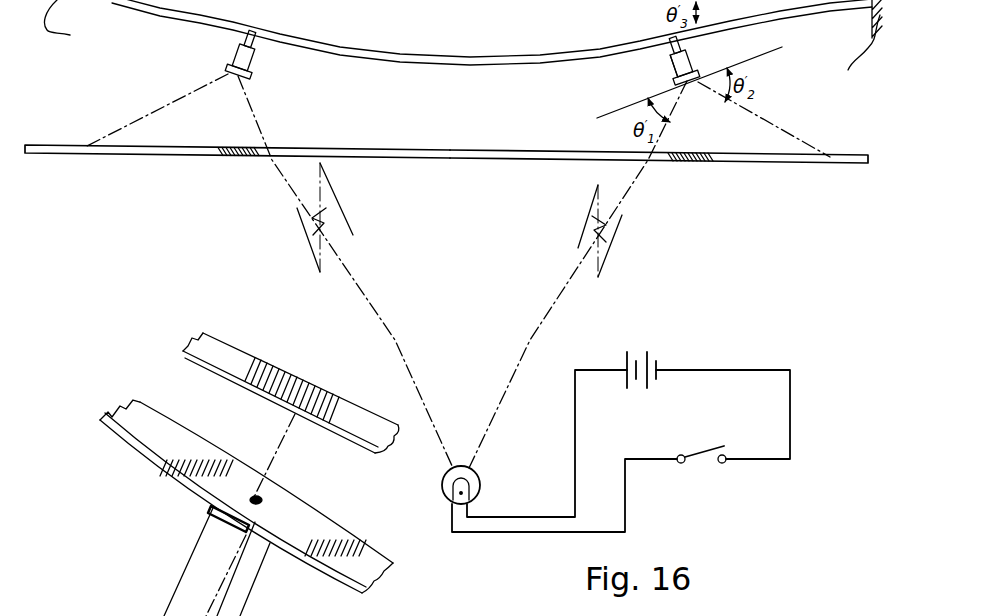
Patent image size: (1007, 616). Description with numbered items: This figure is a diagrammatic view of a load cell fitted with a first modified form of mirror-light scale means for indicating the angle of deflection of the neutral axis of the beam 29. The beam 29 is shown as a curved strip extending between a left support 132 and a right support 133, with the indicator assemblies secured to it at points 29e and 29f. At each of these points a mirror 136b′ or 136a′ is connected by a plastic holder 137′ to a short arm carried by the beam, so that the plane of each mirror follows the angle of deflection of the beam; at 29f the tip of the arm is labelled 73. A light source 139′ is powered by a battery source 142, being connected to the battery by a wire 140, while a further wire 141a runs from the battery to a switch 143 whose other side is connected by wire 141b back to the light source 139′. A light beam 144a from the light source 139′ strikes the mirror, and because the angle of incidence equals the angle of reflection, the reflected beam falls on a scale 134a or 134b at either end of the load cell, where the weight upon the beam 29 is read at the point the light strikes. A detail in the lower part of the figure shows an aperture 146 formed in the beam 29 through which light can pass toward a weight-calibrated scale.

The beam 29 is at (457, 62).
The beam attachment point 29e is at (248, 248).
The beam attachment point 29f is at (679, 43).
The transducer tip 73 is at (662, 35).
The left support 132 is at (77, 23).
The right support wall 133 is at (855, 52).
The scale 134a is at (178, 157).
The scale 134b is at (692, 163).
The mirror 136a′ is at (698, 72).
The mirror 136b′ is at (251, 70).
The plastic holder 137′ is at (234, 59).
The light source 139′ is at (487, 466).
The wire 140 is at (575, 432).
The wire 141a is at (728, 370).
The wire 141b is at (625, 512).
The battery source 142 is at (645, 350).
The switch 143 is at (704, 460).
The light beam 144a is at (541, 315).
The aperture 146 is at (263, 502).